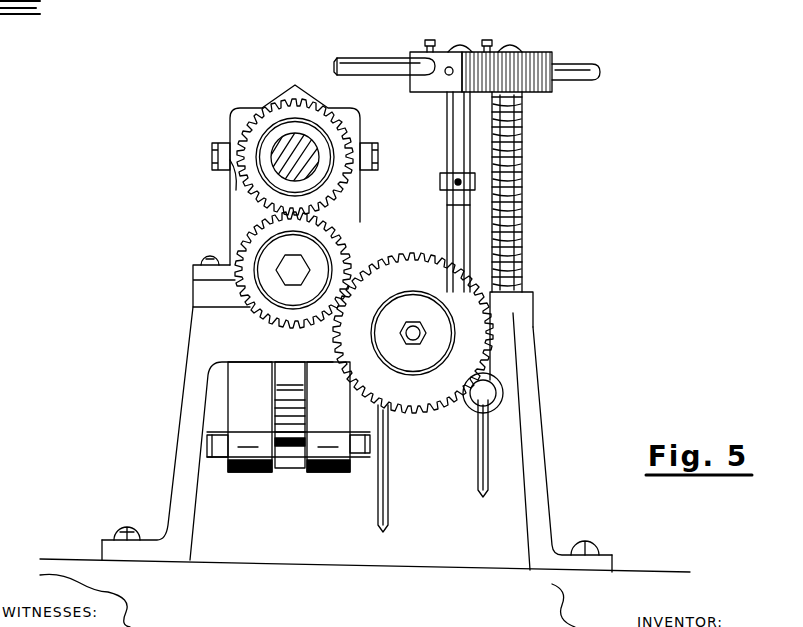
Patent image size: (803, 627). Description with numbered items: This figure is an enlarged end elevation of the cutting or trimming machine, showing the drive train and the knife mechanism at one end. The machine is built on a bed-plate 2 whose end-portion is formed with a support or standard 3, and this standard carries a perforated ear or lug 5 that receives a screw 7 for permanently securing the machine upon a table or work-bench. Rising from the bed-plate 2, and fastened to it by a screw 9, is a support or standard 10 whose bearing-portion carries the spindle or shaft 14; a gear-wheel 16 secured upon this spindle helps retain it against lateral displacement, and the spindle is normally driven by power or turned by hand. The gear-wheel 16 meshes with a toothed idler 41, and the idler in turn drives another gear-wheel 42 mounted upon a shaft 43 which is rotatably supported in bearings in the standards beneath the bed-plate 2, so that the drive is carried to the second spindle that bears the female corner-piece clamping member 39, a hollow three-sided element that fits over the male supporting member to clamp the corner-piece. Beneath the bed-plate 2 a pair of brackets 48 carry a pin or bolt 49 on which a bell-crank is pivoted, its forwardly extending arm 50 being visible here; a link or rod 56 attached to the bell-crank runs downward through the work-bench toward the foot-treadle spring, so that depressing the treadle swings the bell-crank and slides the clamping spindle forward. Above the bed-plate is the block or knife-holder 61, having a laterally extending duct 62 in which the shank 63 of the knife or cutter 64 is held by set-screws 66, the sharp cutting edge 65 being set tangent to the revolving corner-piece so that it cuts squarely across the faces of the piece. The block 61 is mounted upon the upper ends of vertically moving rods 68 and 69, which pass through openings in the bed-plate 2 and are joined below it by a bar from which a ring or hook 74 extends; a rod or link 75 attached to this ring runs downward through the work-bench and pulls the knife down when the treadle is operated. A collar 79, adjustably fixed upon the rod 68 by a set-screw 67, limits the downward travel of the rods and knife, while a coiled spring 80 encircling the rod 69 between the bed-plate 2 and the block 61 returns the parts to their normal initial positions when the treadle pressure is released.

The bed-plate 2 is at (207, 295).
The support or standard 3 is at (178, 447).
The perforated ear or lug 5 is at (108, 551).
The screw 7 is at (131, 537).
The screw 9 is at (205, 262).
The support or standard 10 is at (240, 204).
The spindle or shaft 14 is at (293, 157).
The gear-wheel 16 is at (272, 118).
The female corner-piece clamping member 39 is at (293, 93).
The toothed idler 41 is at (252, 307).
The gear-wheel 42 is at (405, 262).
The shaft 43 is at (410, 335).
The bracket 48 is at (249, 448).
The pin or bolt 49 is at (207, 447).
The forwardly extending arm of the bell-crank 50 is at (292, 393).
The link or rod 56 is at (389, 500).
The block or knife-holder 61 is at (535, 58).
The duct 62 is at (442, 80).
The shank 63 is at (590, 70).
The knife or cutter 64 is at (366, 58).
The cutting edge 65 is at (381, 77).
The set-screw 66 is at (430, 38).
The set-screw 67 is at (440, 182).
The vertically moving rod 68 is at (455, 137).
The vertically moving rod 69 is at (525, 133).
The ring or hook 74 is at (503, 400).
The rod or link 75 is at (476, 450).
The collar 79 is at (447, 205).
The coiled spring 80 is at (518, 200).